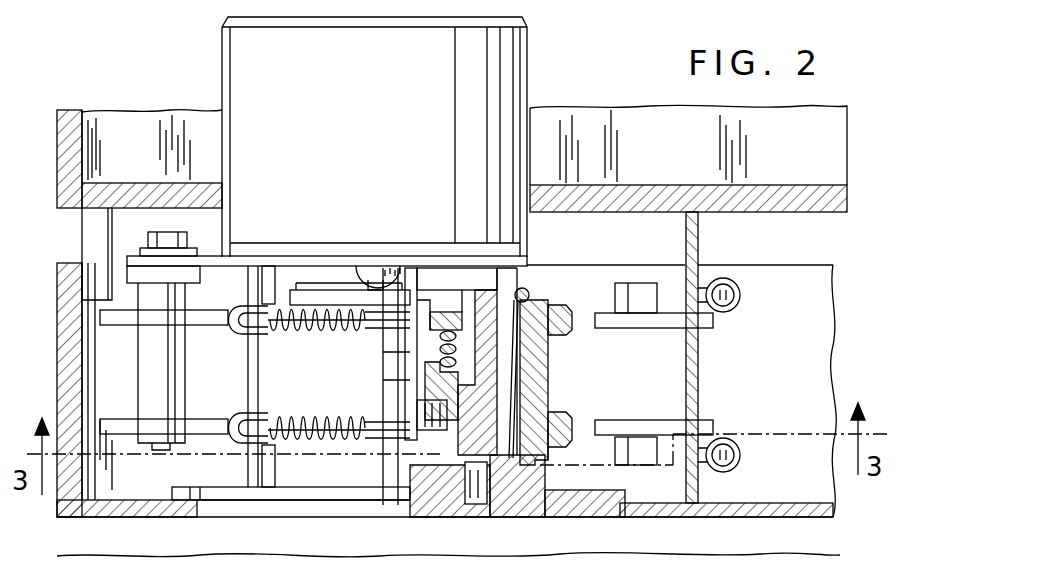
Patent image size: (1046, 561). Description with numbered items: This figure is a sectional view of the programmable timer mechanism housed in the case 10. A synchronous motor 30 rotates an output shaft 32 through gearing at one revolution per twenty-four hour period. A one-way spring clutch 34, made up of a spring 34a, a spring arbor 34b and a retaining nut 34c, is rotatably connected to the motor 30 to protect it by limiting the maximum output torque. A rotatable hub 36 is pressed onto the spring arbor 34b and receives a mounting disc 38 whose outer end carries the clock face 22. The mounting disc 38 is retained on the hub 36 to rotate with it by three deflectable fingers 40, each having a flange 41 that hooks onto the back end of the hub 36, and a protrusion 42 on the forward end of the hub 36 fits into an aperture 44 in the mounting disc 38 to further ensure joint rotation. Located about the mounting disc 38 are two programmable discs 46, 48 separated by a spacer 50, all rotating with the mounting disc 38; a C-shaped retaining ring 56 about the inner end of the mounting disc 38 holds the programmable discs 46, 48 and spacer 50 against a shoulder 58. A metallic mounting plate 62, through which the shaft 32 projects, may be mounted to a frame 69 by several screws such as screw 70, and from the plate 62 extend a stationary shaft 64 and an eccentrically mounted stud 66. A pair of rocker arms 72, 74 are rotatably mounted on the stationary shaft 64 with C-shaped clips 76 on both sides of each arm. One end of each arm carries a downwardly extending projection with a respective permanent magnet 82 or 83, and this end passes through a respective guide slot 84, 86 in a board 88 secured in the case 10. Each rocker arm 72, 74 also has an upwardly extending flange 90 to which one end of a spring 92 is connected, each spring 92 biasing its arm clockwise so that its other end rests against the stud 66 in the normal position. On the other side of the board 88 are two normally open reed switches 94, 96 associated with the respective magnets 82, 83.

The case 10 is at (48, 202).
The clock face 22 is at (226, 514).
The synchronous motor 30 is at (527, 18).
The output shaft 32 is at (415, 272).
The one-way spring clutch 34 is at (428, 250).
The spring 34a is at (439, 328).
The spring arbor 34b is at (402, 395).
The retaining nut 34c is at (430, 431).
The hub 36 is at (544, 384).
The mounting disc 38 is at (510, 498).
The deflectable fingers 40 is at (545, 354).
The flange 41 is at (490, 285).
The protrusion 42 is at (458, 512).
The aperture 44 is at (480, 512).
The programmable disc 46 is at (572, 421).
The programmable disc 48 is at (568, 314).
The spacer 50 is at (337, 402).
The C-shaped retaining ring 56 is at (522, 290).
The shoulder 58 is at (549, 453).
The mounting plate 62 is at (135, 262).
The stationary shaft 64 is at (260, 374).
The eccentrically mounted stud 66 is at (150, 356).
The frame 69 is at (155, 196).
The screw 70 is at (357, 272).
The rocker arm 72 is at (210, 442).
The rocker arm 74 is at (200, 320).
The C-shaped clips 76 is at (261, 260).
The permanent magnet 82 is at (636, 466).
The permanent magnet 83 is at (636, 300).
The guide slot 84 is at (699, 426).
The guide slot 86 is at (699, 331).
The board 88 is at (699, 251).
The upwardly extending flange 90 is at (238, 320).
The spring 92 is at (345, 336).
The reed switch 94 is at (741, 462).
The reed switch 96 is at (741, 297).